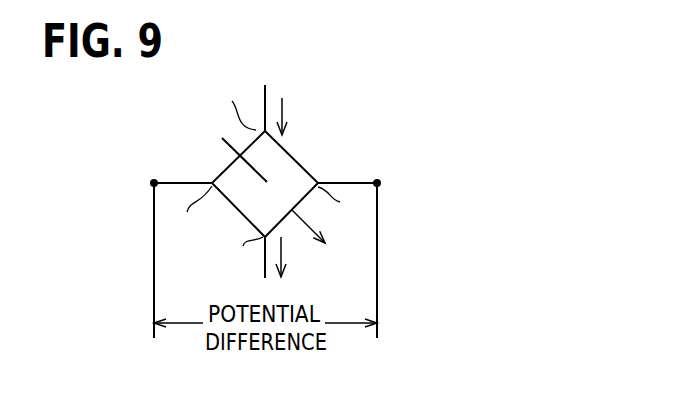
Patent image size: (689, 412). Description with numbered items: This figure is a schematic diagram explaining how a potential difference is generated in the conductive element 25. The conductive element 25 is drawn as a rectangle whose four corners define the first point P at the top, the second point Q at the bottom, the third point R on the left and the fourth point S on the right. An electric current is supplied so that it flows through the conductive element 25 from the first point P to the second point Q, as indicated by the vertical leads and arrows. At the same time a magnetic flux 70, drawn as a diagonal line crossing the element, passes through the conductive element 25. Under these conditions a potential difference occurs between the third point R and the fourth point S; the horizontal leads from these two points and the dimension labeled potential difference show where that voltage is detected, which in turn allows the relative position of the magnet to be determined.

The conductive element 25 is at (295, 150).
The magnetic flux 70 is at (228, 148).
The first point P is at (243, 103).
The second point Q is at (245, 255).
The third point R is at (196, 213).
The fourth point S is at (336, 210).